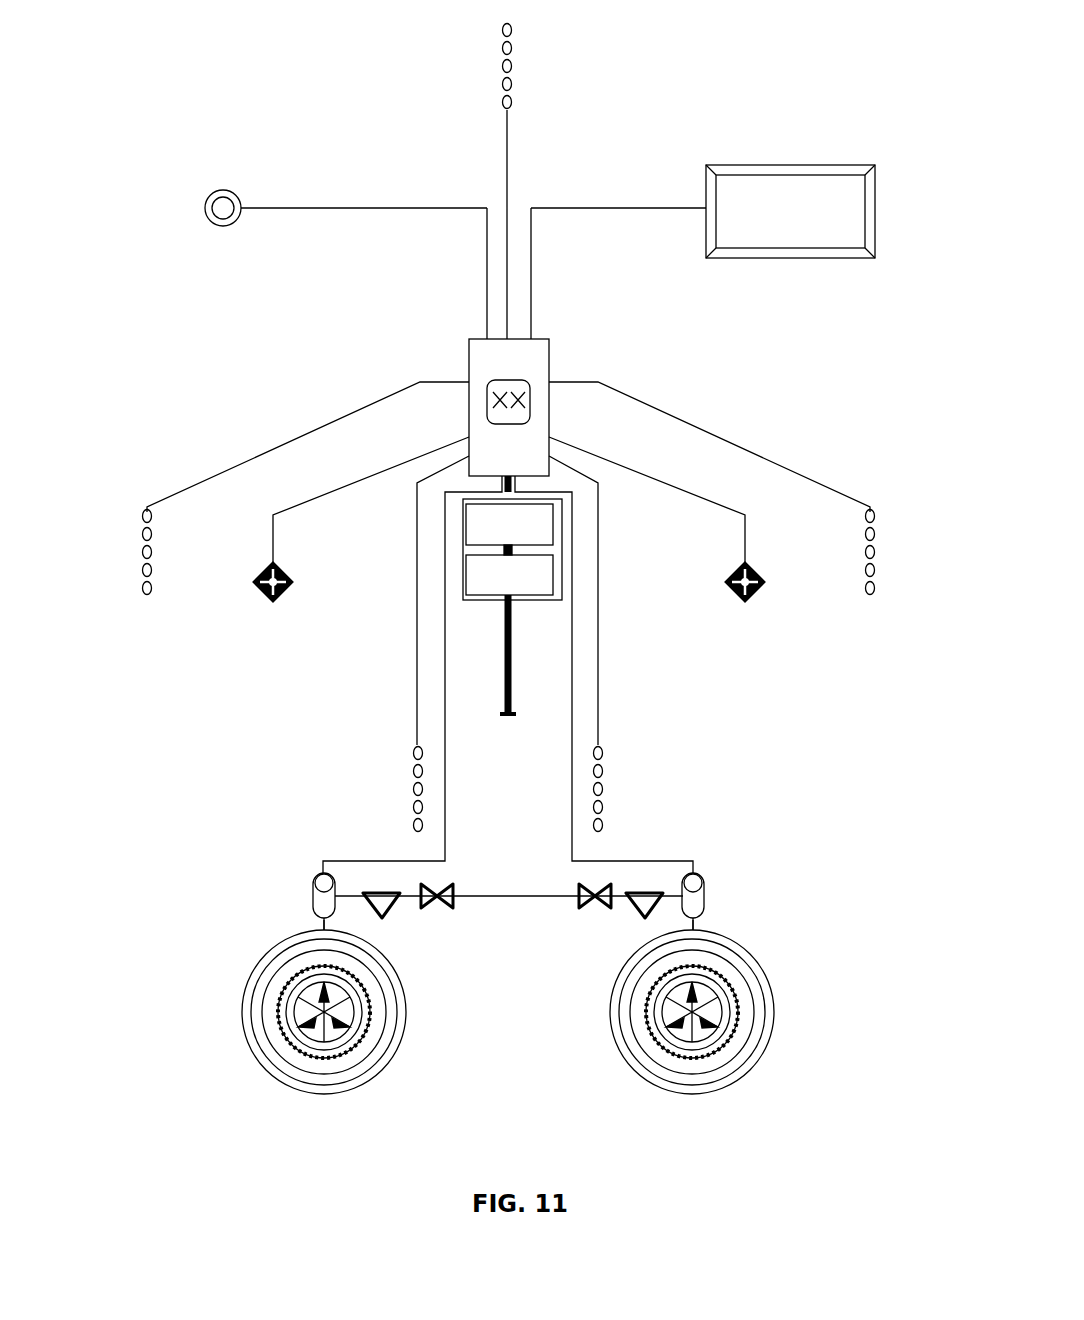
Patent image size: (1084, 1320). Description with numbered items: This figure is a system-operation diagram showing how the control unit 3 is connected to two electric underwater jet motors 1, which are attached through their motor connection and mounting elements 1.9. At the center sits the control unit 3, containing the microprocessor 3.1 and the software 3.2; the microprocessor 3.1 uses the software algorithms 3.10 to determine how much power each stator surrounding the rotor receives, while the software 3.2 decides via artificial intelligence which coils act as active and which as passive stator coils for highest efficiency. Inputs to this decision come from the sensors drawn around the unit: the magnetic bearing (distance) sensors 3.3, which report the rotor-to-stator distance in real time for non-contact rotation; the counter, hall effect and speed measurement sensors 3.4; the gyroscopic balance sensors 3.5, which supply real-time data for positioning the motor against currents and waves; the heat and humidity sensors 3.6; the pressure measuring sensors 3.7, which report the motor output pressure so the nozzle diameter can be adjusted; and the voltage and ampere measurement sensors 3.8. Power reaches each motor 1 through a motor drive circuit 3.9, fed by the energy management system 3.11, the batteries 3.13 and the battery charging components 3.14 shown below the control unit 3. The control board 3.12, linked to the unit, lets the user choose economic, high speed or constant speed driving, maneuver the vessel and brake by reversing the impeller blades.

The electric underwater jet motor 1 is at (236, 1008).
The motor connection and mounting elements 1.9 is at (321, 921).
The control unit 3 is at (549, 355).
The microprocessor 3.1 is at (528, 405).
The software 3.2 is at (490, 405).
The magnetic bearing (distance) sensors 3.3 is at (262, 592).
The counter, hall effect and speed measurement sensors 3.4 is at (390, 905).
The gyroscopic balance sensors 3.5 is at (513, 65).
The heat and humidity sensors 3.6 is at (572, 890).
The pressure measuring sensors 3.7 is at (400, 782).
The voltage and ampere measurement sensors 3.8 is at (445, 499).
The motor drive circuit 3.9 is at (312, 896).
The software algorithms 3.10 is at (223, 226).
The energy management system 3.11 is at (562, 548).
The control board 3.12 is at (794, 258).
The batteries 3.13 is at (477, 522).
The battery charging components 3.14 is at (515, 704).